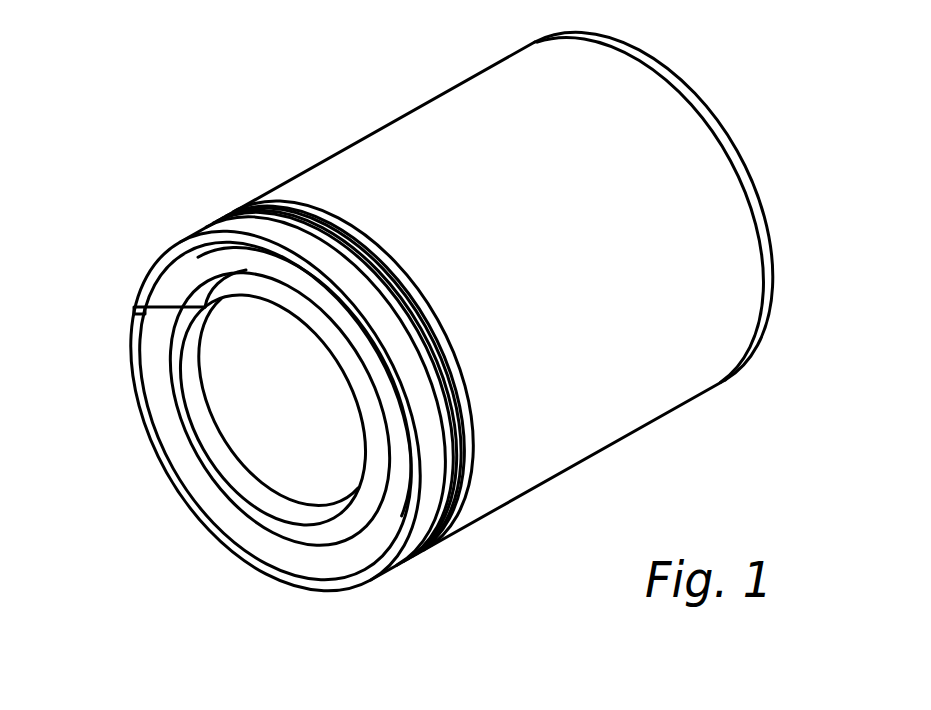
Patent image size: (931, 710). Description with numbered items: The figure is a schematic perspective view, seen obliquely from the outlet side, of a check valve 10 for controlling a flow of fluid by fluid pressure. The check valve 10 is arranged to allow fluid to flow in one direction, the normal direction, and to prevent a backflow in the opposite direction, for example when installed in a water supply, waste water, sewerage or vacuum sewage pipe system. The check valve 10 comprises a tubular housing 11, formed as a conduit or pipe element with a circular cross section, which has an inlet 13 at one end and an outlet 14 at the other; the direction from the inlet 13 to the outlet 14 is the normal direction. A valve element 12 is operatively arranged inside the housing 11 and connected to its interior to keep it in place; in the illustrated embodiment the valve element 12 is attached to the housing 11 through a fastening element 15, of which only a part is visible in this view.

The check valve 10 is at (397, 50).
The tubular housing 11 is at (664, 406).
The valve element 12 is at (235, 440).
The inlet 13 is at (750, 136).
The outlet 14 is at (124, 432).
The fastening element 15 is at (160, 279).